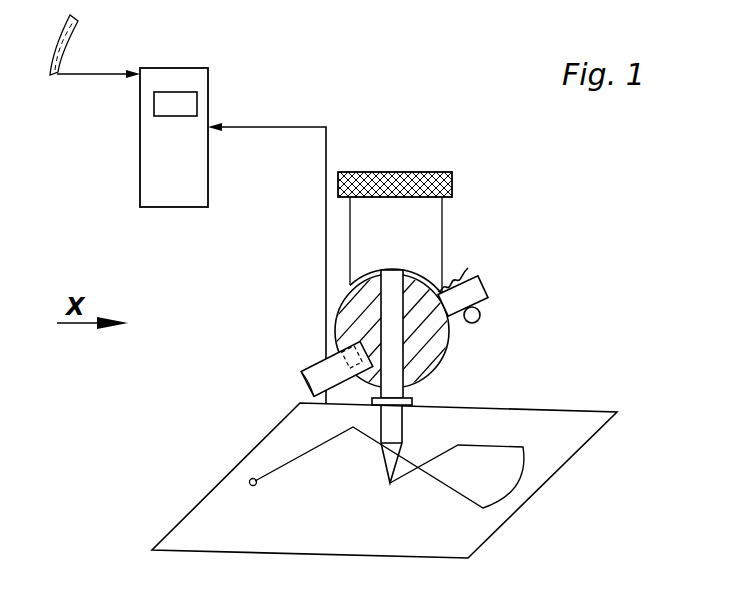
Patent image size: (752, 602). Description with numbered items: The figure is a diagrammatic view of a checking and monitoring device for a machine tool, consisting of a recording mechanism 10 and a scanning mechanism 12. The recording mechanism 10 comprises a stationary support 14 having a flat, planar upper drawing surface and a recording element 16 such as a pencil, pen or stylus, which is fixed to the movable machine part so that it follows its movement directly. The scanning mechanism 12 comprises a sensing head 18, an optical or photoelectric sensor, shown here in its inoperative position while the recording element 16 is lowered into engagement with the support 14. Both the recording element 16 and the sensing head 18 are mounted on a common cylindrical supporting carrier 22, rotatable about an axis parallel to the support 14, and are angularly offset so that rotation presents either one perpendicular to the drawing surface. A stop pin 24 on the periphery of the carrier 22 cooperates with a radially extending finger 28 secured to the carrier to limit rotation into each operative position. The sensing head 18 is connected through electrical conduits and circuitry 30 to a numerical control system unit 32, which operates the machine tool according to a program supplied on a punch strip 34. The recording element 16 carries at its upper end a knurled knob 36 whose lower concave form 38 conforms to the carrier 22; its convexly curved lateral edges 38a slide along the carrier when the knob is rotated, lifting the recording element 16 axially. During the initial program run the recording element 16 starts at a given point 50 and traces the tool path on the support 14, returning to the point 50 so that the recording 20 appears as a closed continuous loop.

The recording mechanism 10 is at (418, 423).
The scanning mechanism 12 is at (292, 351).
The stationary support 14 is at (557, 458).
The recording element 16 is at (388, 420).
The sensing head 18 is at (312, 380).
The recording 20 is at (510, 445).
The cylindrical supporting carrier 22 is at (446, 352).
The stop pin 24 is at (481, 314).
The radially extending finger 28 is at (479, 290).
The electrical conduits and circuitry 30 is at (293, 128).
The numerical control system unit 32 is at (203, 96).
The punch strip 34 is at (76, 35).
The knurled knob 36 is at (390, 172).
The concave form 38 is at (424, 292).
The lateral edges 38a is at (470, 273).
The starting point 50 is at (250, 480).